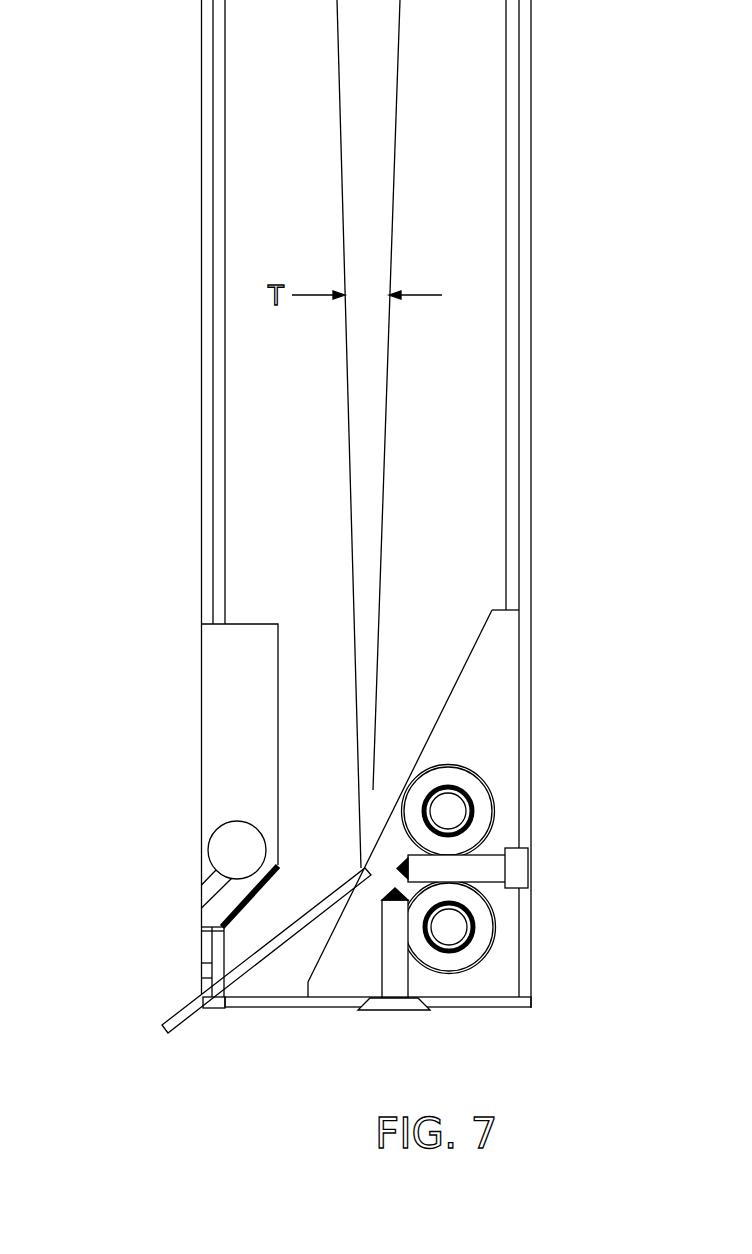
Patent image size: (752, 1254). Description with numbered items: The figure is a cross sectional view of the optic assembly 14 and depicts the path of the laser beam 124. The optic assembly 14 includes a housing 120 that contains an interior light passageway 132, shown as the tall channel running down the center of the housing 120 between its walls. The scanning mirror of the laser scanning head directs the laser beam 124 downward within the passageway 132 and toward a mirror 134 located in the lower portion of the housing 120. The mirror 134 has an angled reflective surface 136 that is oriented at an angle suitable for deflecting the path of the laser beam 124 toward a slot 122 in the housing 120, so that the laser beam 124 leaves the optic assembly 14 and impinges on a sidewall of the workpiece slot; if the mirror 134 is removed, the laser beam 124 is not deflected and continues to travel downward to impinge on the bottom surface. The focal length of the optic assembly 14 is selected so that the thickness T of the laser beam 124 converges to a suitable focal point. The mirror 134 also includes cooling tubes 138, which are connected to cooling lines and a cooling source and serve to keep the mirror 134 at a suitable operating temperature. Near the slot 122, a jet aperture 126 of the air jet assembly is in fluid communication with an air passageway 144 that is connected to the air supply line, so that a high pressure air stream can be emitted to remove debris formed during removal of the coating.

The optic assembly 14 is at (158, 213).
The housing 120 is at (525, 265).
The slot 122 is at (200, 978).
The laser beam 124 is at (365, 165).
The jet aperture 126 is at (212, 893).
The interior light passageway 132 is at (467, 65).
The mirror 134 is at (492, 712).
The reflective surface 136 is at (478, 640).
The cooling tubes 138 is at (495, 800).
The air passageway 144 is at (238, 821).